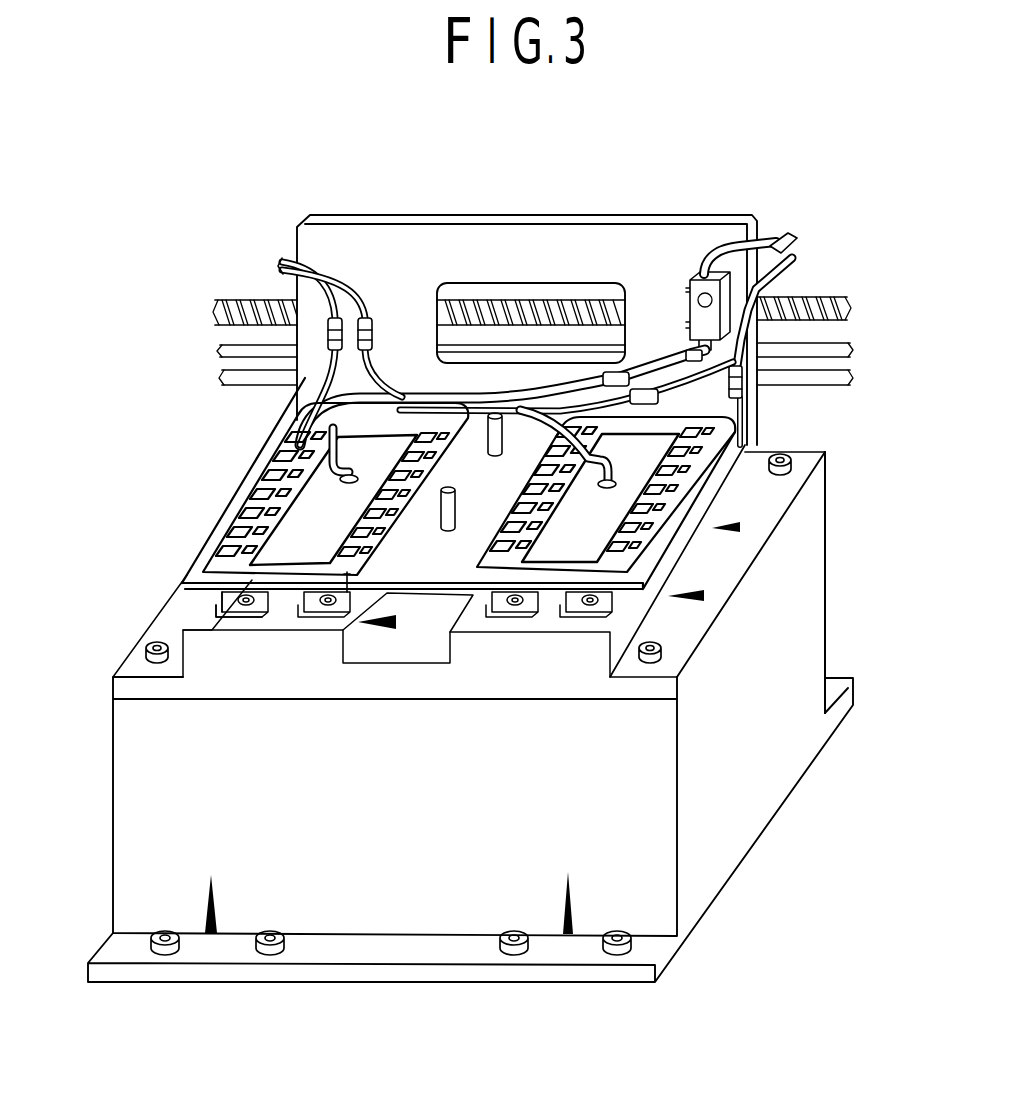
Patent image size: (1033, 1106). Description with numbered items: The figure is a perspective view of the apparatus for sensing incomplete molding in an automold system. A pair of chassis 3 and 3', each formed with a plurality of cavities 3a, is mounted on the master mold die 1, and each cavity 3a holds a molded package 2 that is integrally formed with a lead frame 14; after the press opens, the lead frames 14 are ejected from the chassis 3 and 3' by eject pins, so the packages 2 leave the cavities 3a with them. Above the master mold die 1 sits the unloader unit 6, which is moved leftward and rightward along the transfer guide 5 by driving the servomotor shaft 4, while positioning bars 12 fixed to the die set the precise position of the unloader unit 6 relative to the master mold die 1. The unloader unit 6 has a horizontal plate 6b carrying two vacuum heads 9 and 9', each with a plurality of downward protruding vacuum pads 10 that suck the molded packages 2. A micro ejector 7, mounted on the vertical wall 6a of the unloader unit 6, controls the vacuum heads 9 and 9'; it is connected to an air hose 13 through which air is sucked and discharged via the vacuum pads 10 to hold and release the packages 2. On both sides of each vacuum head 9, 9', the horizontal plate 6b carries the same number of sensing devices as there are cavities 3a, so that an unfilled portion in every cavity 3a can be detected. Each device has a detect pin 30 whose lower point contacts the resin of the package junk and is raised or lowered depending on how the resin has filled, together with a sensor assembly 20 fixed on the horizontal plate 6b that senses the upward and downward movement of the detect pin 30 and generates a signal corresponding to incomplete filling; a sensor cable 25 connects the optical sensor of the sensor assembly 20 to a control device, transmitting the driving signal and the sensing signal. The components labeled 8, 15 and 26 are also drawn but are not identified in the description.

The master mold die 1 is at (113, 870).
The molded package 2 is at (515, 603).
The chassis 3 is at (430, 690).
The chassis 3' is at (536, 844).
The cavities 3a is at (612, 643).
The servomotor shaft 4 is at (820, 297).
The transfer guide 5 is at (815, 378).
The unloader unit 6 is at (647, 213).
The vertical wall 6a is at (683, 224).
The horizontal plate 6b is at (204, 567).
The micro ejector 7 is at (710, 264).
The tube bundle 8 is at (408, 397).
The vacuum head 9 is at (318, 489).
The vacuum head 9' is at (684, 534).
The vacuum pads 10 is at (225, 590).
The positioning bars 12 is at (390, 470).
The air hose 13 is at (790, 228).
The lead frames 14 is at (232, 594).
The fastening bolt 15 is at (300, 618).
The sensor assembly 20 is at (267, 458).
The sensor cable 25 is at (328, 320).
The tube connector 26 is at (742, 395).
The detect pin 30 is at (340, 578).